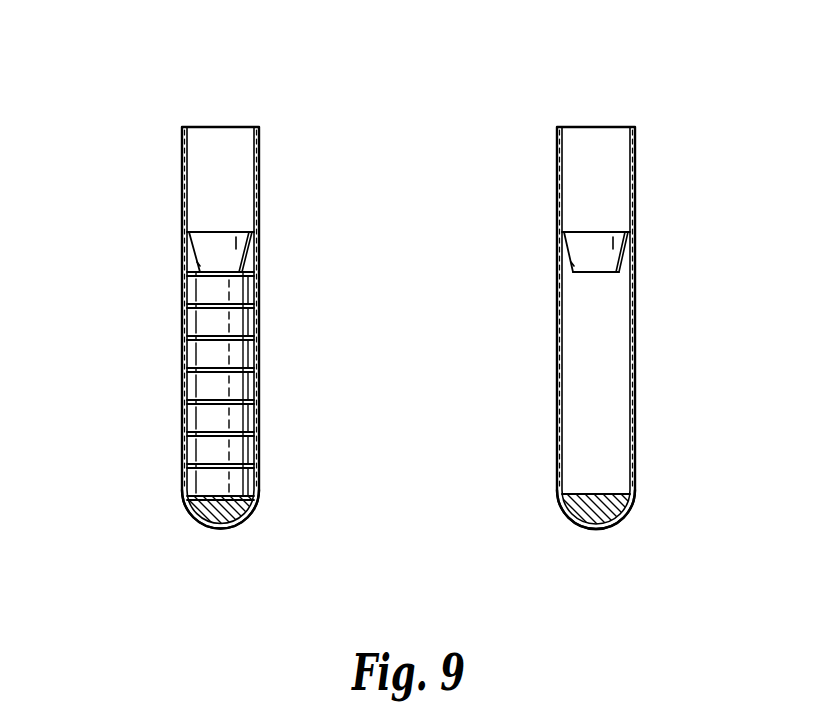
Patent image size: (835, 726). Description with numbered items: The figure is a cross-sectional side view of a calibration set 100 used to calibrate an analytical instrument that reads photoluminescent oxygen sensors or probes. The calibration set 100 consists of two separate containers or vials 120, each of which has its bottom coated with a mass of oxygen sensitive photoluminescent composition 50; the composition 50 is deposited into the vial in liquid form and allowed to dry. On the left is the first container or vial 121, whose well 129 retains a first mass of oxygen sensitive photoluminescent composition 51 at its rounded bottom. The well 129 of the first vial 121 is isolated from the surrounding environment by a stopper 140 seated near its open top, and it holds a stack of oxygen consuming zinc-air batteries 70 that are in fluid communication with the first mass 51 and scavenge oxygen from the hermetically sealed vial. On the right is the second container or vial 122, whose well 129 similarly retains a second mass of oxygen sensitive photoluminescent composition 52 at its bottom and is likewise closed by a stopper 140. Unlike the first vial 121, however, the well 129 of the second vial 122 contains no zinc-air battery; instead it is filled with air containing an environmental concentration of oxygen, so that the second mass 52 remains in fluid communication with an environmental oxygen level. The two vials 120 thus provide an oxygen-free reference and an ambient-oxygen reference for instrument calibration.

The calibration set 100 is at (143, 78).
The container or vial 120 is at (200, 174).
The first container or vial 121 is at (218, 386).
The second container or vial 122 is at (557, 378).
The well 129 is at (223, 150).
The stopper 140 is at (241, 233).
The oxygen consuming zinc-air battery 70 is at (260, 282).
The oxygen sensitive photoluminescent composition 50 is at (218, 527).
The first mass of oxygen sensitive photoluminescent composition 51 is at (245, 518).
The second mass of oxygen sensitive photoluminescent composition 52 is at (620, 517).